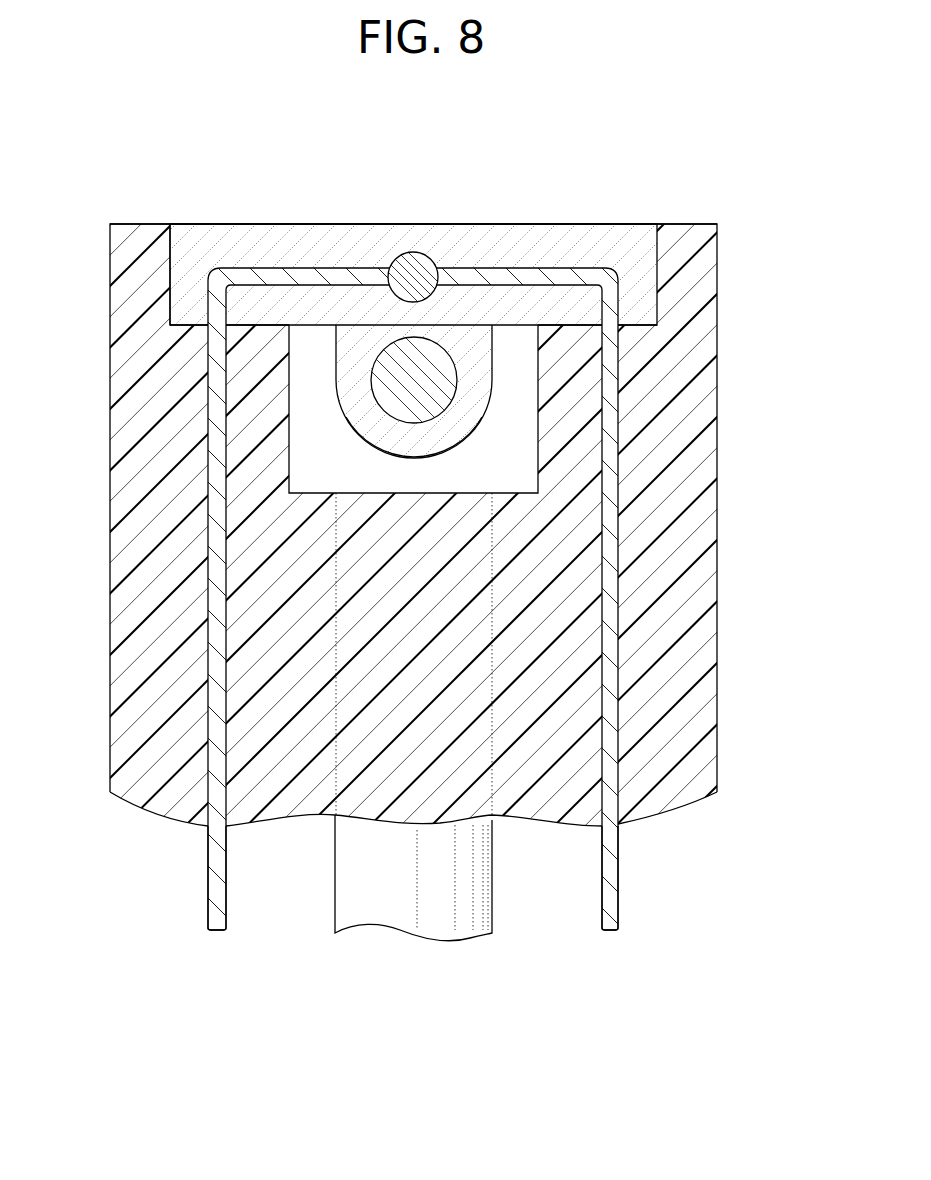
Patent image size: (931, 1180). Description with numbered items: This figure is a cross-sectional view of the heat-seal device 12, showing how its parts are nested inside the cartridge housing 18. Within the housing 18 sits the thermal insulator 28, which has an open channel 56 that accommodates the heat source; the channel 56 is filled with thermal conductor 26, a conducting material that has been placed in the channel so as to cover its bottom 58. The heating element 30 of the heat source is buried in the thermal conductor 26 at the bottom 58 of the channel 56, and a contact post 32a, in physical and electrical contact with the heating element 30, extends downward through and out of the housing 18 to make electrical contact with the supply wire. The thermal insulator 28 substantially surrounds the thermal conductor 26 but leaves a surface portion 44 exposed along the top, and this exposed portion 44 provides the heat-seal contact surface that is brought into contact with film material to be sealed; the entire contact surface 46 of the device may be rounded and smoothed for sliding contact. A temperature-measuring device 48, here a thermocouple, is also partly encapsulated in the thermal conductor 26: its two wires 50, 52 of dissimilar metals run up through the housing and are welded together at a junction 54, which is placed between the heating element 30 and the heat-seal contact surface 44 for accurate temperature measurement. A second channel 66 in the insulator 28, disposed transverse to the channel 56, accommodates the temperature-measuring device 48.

The heat-seal device 12 is at (580, 131).
The cartridge housing 18 is at (716, 374).
The thermal conductor 26 is at (243, 234).
The thermal insulator 28 is at (527, 427).
The heating element 30 is at (401, 392).
The contact post 32a is at (433, 905).
The exposed surface portion 44 is at (365, 224).
The contact surface 46 is at (294, 220).
The temperature-measuring device 48 is at (621, 530).
The thermocouple wire 50 is at (207, 866).
The thermocouple wire 52 is at (619, 885).
The thermocouple junction 54 is at (412, 265).
The channel 56 is at (334, 358).
The channel bottom 58 is at (414, 460).
The second channel 66 is at (169, 313).